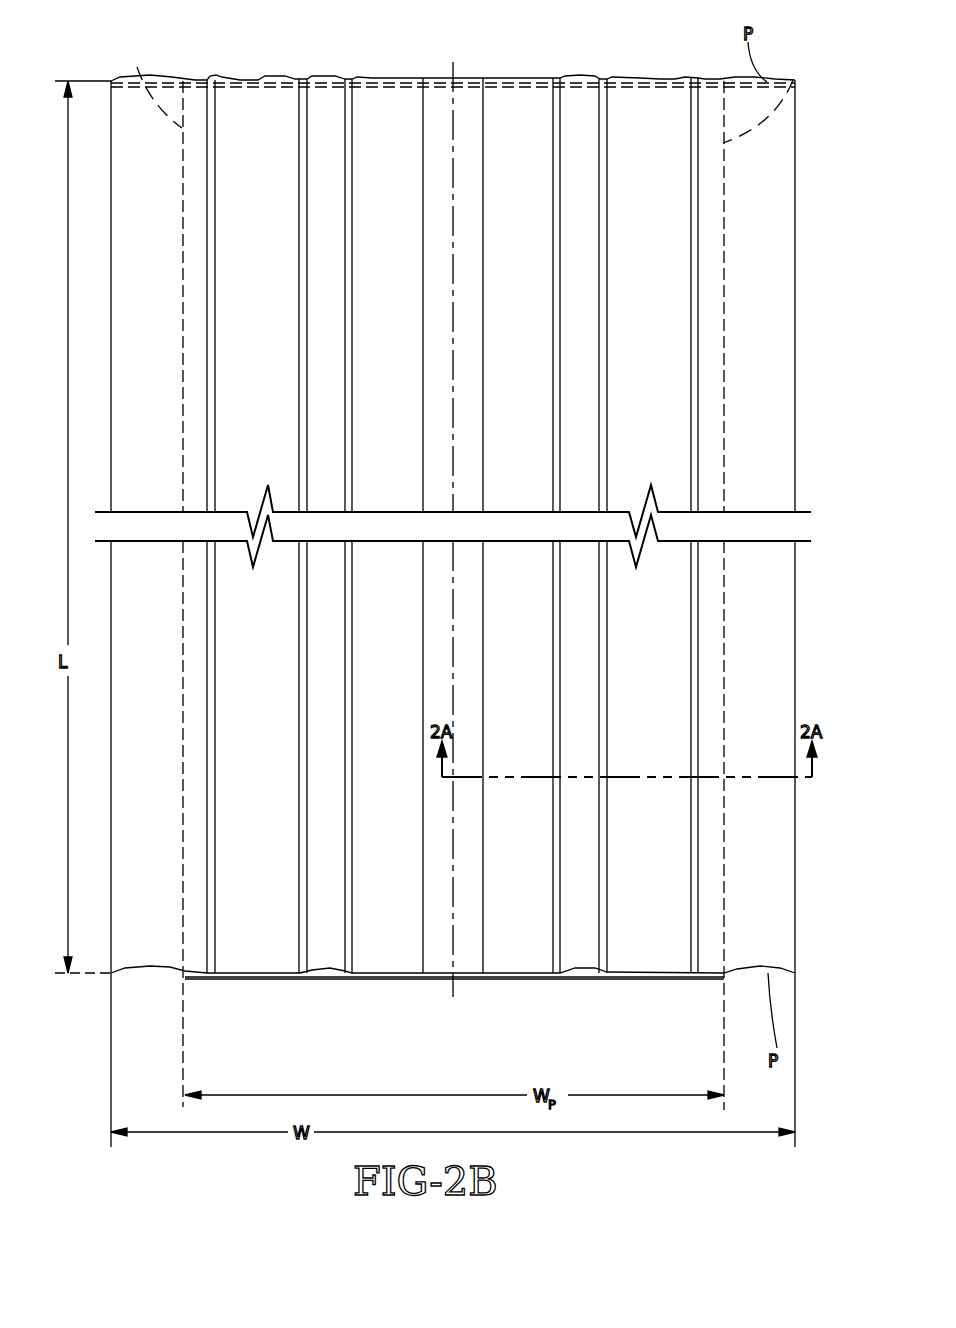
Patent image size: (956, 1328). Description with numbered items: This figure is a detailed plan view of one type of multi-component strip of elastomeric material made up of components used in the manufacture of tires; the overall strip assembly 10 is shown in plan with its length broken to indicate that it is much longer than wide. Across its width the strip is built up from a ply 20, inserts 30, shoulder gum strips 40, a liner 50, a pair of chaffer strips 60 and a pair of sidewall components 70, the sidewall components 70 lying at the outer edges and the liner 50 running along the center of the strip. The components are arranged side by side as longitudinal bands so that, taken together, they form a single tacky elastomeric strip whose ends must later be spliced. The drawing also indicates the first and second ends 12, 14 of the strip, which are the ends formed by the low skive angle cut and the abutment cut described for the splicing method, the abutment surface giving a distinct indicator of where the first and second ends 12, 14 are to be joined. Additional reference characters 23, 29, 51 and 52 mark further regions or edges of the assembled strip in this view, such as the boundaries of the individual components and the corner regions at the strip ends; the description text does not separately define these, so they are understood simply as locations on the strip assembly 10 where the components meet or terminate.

The roofing panel 10 is at (268, 50).
The first end 12 is at (705, 992).
The second end 14 is at (710, 70).
The ply 20 is at (481, 977).
The rib base 23 is at (312, 977).
The corner region 29 is at (140, 77).
The inserts 30 is at (330, 973).
The shoulder gum strips 40 is at (417, 977).
The liner 50 is at (439, 952).
The side edge 51 is at (643, 977).
The side edge 52 is at (267, 977).
The chaffer strips 60 is at (253, 945).
The sidewall components 70 is at (148, 972).